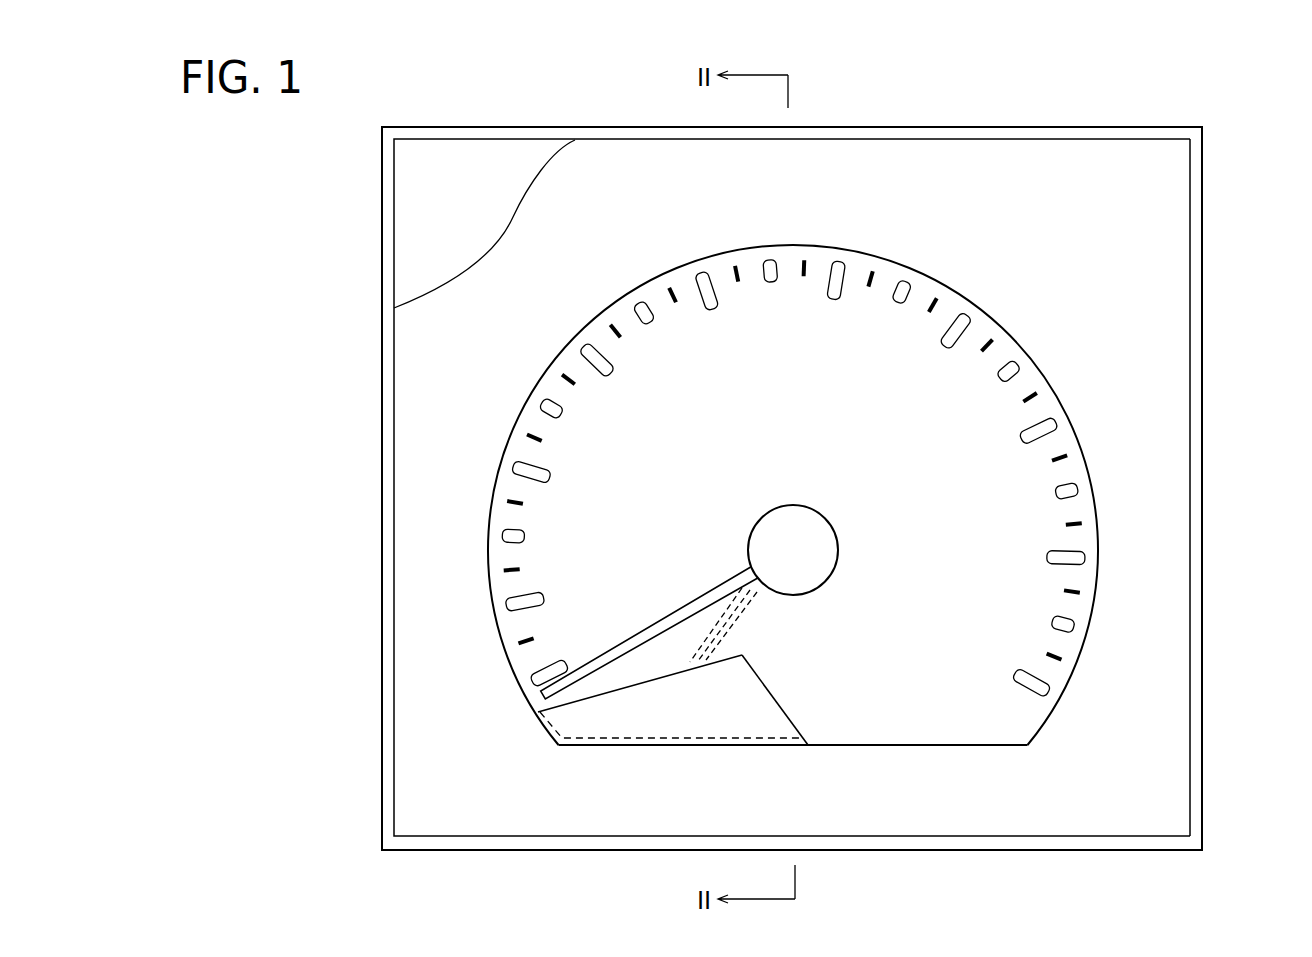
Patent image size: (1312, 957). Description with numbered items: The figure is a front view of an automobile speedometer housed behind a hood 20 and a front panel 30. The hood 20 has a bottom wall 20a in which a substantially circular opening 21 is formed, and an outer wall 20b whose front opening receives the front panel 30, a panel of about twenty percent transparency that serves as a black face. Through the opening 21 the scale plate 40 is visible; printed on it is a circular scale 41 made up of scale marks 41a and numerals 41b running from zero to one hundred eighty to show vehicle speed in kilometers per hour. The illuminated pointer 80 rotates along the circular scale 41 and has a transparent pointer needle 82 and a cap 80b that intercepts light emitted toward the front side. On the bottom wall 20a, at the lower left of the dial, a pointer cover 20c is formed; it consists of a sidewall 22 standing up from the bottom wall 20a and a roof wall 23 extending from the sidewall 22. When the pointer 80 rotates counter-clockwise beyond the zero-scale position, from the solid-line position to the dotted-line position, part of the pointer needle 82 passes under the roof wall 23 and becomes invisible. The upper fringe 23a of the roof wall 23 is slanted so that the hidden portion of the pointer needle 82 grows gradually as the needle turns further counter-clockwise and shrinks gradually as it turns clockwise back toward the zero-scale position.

The hood 20 is at (845, 461).
The bottom wall of the hood 20a is at (1163, 330).
The outer wall of the hood 20b is at (1203, 574).
The pointer cover 20c is at (750, 730).
The opening 21 is at (903, 743).
The sidewall 22 is at (592, 753).
The roof wall 23 is at (692, 732).
The upper fringe of the roof wall 23a is at (742, 655).
The front panel 30 is at (484, 174).
The scale plate 40 is at (876, 509).
The circular scale 41 is at (673, 292).
The scale marks 41a is at (590, 350).
The numerals 41b is at (667, 403).
The illuminated pointer 80 is at (734, 561).
The cap 80b is at (838, 556).
The pointer needle 82 is at (655, 620).